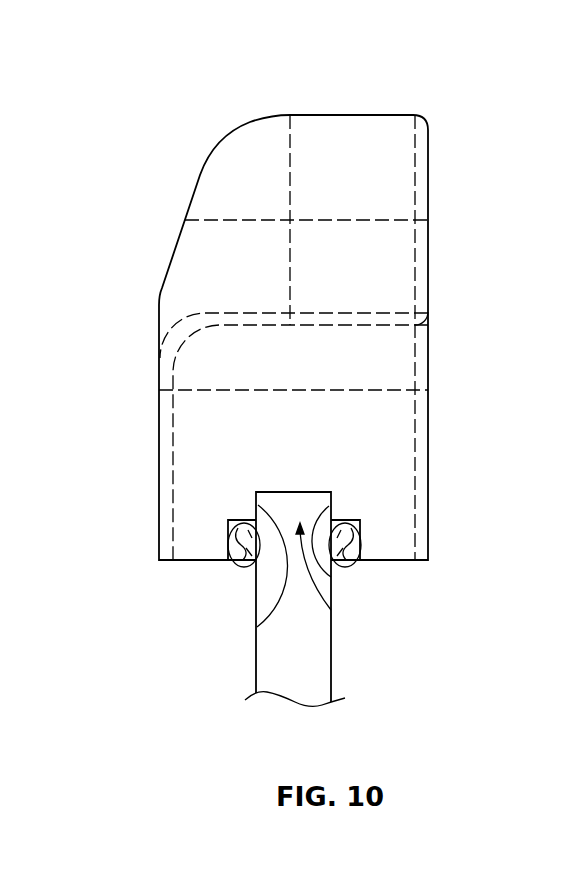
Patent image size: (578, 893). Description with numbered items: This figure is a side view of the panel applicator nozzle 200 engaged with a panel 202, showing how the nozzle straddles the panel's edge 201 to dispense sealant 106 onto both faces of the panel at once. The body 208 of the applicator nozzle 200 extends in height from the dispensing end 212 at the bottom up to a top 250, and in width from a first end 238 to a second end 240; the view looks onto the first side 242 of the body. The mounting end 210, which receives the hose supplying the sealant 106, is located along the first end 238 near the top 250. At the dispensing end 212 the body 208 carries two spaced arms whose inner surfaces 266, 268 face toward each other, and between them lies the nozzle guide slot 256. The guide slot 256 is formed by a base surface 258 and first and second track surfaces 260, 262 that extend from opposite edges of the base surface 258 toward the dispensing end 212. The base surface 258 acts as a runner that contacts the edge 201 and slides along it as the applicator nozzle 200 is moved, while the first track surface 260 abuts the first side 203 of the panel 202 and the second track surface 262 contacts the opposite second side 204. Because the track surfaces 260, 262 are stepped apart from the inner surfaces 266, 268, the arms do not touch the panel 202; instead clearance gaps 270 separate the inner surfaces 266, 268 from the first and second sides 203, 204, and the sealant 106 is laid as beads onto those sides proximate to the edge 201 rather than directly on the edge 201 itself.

The applicator nozzle 200 is at (115, 171).
The edge 201 is at (318, 497).
The panel 202 is at (310, 670).
The first side 203 is at (333, 645).
The second side 204 is at (256, 648).
The body 208 is at (313, 152).
The mounting end 210 is at (434, 162).
The dispensing end 212 is at (452, 571).
The first end 238 is at (432, 403).
The second end 240 is at (155, 413).
The first side 242 is at (377, 252).
The top 250 is at (374, 110).
The nozzle guide slot 256 is at (331, 610).
The base surface 258 is at (322, 492).
The first track surface 260 is at (348, 575).
The second track surface 262 is at (258, 624).
The inner surface 266 is at (362, 522).
The inner surface 268 is at (237, 562).
The clearance gaps 270 is at (243, 577).
The sealant 106 is at (230, 520).